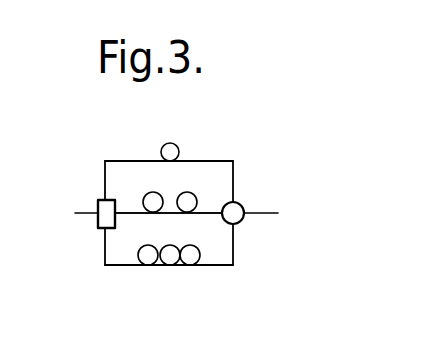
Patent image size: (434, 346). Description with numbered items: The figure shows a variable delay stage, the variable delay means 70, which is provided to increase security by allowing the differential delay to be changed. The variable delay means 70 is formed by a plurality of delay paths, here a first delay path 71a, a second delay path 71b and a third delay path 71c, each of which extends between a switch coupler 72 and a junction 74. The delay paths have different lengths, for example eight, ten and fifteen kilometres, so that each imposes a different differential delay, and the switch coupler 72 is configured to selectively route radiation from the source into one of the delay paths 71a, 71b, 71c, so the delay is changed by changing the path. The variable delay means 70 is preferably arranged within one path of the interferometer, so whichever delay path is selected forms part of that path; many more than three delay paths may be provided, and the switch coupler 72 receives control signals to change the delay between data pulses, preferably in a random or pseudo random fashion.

The variable delay means 70 is at (162, 228).
The first delay path 71a is at (215, 160).
The second delay path 71b is at (135, 215).
The third delay path 71c is at (132, 265).
The switch coupler 72 is at (103, 212).
The junction 74 is at (236, 211).